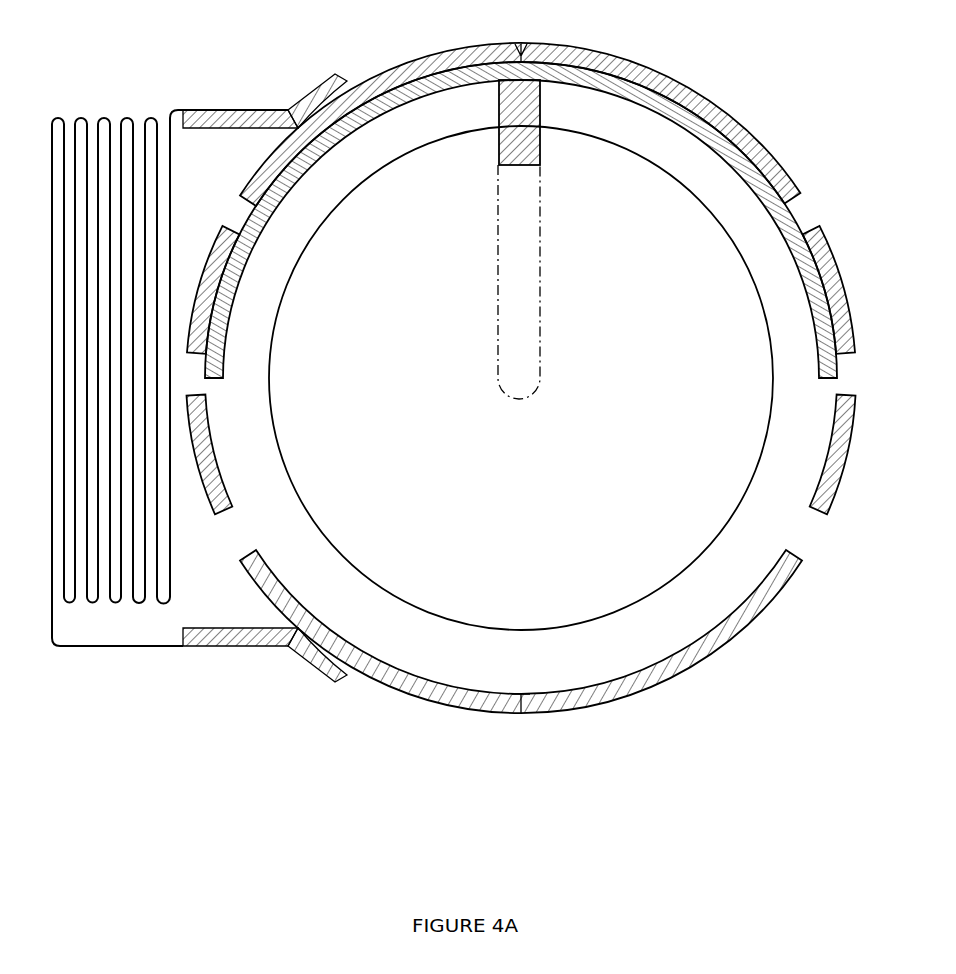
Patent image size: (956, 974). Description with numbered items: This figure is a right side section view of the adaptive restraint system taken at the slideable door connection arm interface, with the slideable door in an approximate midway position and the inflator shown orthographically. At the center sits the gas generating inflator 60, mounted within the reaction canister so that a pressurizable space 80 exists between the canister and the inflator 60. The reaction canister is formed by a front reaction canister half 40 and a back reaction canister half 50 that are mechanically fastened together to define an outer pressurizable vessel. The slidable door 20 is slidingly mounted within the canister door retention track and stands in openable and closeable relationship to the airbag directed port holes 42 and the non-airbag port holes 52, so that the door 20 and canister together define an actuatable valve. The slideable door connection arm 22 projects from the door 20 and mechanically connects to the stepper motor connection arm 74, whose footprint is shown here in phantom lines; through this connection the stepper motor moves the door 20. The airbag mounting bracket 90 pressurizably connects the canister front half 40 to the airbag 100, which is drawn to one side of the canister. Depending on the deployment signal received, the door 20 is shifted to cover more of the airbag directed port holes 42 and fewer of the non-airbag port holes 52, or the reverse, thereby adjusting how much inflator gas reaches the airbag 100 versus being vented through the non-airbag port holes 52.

The airbag 100 is at (140, 105).
The airbag mounting bracket 90 is at (317, 77).
The pressurizable space 80 is at (462, 112).
The gas generating inflator 60 is at (668, 165).
The slidable door 20 is at (805, 215).
The slideable door connection arm 22 is at (545, 108).
The stepper motor connection arm 74 is at (517, 403).
The non-airbag port holes 52 is at (808, 537).
The airbag directed port holes 42 is at (237, 537).
The front reaction canister half 40 is at (415, 707).
The back reaction canister half 50 is at (585, 705).